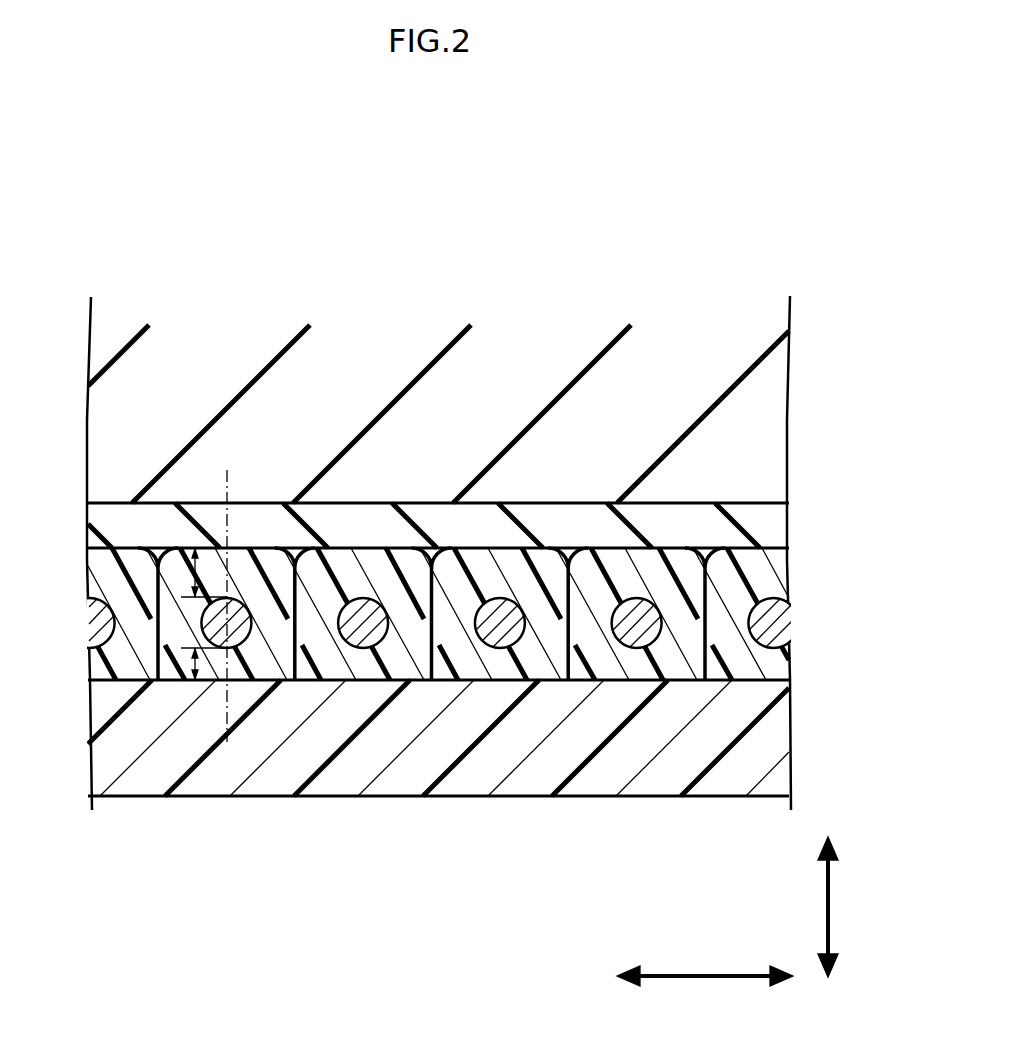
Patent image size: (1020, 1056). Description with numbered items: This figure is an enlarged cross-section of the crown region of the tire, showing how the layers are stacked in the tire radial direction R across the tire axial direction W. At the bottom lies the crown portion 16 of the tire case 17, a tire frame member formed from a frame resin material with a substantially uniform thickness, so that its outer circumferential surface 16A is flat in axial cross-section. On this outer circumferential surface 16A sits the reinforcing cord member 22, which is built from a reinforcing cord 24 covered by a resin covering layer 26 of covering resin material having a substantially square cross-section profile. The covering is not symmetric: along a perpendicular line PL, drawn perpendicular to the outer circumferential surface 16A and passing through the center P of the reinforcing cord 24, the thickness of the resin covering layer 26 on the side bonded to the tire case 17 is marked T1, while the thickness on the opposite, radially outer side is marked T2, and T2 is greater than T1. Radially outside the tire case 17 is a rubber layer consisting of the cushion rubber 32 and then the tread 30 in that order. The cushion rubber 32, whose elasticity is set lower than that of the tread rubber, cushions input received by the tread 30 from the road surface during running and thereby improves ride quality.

The crown portion 16 is at (438, 787).
The tire case 17 is at (373, 797).
The outer circumferential surface 16A is at (405, 680).
The reinforcing cord member 22 is at (606, 548).
The reinforcing cord 24 is at (627, 657).
The resin covering layer 26 is at (597, 655).
The tread 30 is at (786, 441).
The cushion rubber 32 is at (786, 523).
The perpendicular line PL is at (229, 484).
The center of the reinforcing cord P is at (228, 623).
The thickness of the resin covering layer on the bonded side T1 is at (188, 664).
The thickness of the resin covering layer on the opposite side T2 is at (185, 582).
The tire radial direction R is at (830, 906).
The tire axial direction W is at (703, 980).